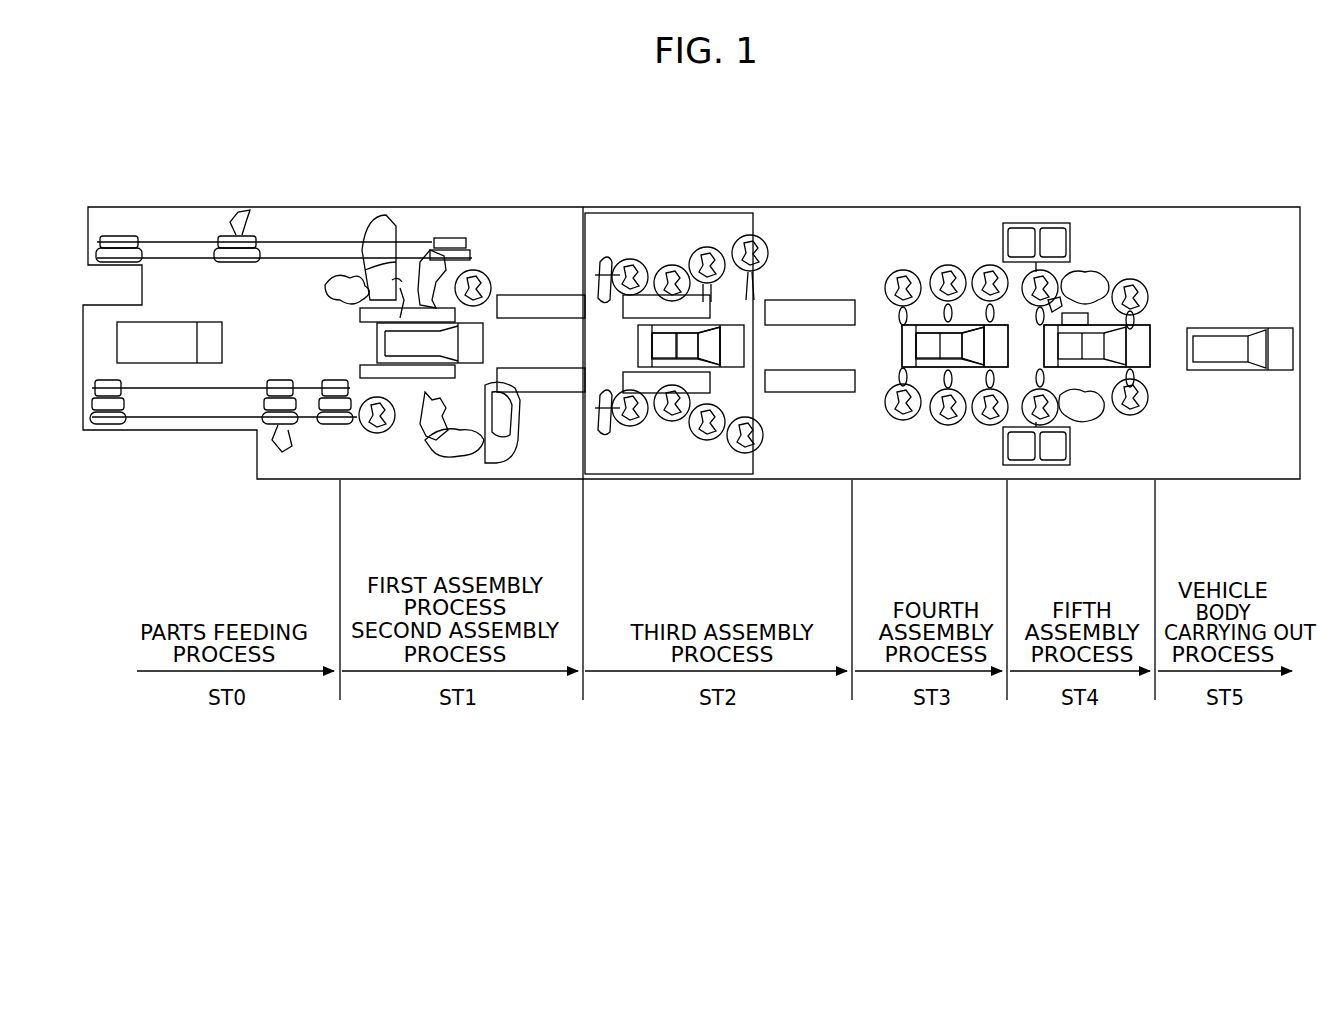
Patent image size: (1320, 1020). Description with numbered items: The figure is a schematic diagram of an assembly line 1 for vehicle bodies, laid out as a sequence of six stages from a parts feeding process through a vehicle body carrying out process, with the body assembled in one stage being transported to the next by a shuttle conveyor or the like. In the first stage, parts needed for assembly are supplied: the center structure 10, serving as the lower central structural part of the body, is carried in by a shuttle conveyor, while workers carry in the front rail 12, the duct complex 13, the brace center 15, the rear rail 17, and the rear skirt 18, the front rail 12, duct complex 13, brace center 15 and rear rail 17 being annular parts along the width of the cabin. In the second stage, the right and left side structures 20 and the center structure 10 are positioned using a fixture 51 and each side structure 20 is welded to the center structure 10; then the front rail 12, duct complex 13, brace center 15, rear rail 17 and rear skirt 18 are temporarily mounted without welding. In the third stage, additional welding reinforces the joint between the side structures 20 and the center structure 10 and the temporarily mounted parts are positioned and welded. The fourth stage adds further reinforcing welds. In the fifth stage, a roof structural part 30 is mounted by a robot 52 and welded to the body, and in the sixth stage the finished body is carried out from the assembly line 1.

The assembly line 1 is at (850, 157).
The center structure 10 is at (175, 340).
The front rail 12 is at (706, 338).
The duct complex 13 is at (722, 340).
The brace center 15 is at (672, 370).
The rear rail 17 is at (660, 400).
The rear skirt 18 is at (640, 360).
The side structure 20 is at (407, 362).
The roof structural part 30 is at (1090, 368).
The fixture 51 is at (420, 320).
The robot 52 is at (1096, 290).